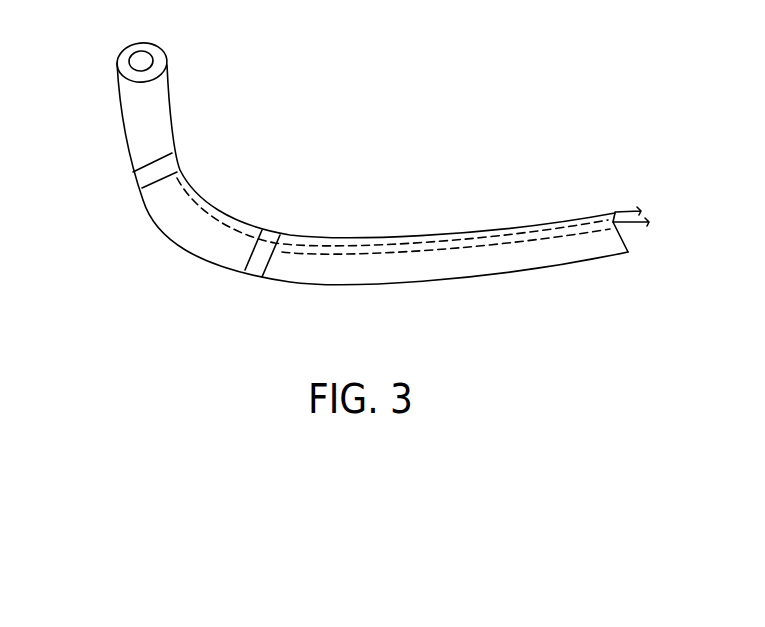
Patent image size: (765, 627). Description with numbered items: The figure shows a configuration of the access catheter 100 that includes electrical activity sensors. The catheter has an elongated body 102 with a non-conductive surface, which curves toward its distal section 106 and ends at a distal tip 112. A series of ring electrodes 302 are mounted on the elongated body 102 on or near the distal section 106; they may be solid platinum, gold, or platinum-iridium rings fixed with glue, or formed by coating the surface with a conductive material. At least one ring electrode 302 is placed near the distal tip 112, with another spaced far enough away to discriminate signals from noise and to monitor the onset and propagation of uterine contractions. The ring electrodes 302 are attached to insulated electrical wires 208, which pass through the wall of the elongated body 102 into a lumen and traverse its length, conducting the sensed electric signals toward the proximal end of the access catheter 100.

The access catheter 100 is at (470, 111).
The elongated body 102 is at (345, 262).
The distal section 106 is at (172, 70).
The distal tip 112 is at (139, 57).
The electrical wires 208 is at (388, 252).
The ring electrodes 302 is at (133, 183).